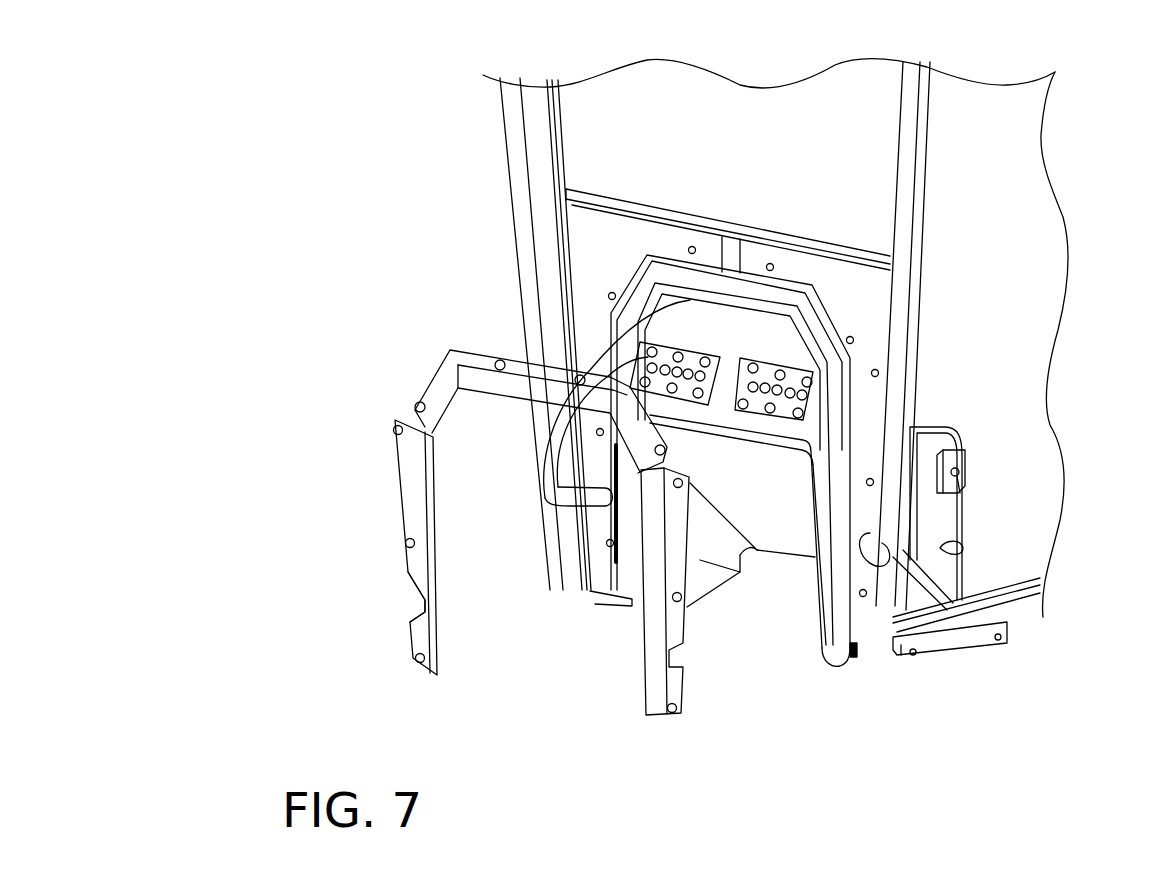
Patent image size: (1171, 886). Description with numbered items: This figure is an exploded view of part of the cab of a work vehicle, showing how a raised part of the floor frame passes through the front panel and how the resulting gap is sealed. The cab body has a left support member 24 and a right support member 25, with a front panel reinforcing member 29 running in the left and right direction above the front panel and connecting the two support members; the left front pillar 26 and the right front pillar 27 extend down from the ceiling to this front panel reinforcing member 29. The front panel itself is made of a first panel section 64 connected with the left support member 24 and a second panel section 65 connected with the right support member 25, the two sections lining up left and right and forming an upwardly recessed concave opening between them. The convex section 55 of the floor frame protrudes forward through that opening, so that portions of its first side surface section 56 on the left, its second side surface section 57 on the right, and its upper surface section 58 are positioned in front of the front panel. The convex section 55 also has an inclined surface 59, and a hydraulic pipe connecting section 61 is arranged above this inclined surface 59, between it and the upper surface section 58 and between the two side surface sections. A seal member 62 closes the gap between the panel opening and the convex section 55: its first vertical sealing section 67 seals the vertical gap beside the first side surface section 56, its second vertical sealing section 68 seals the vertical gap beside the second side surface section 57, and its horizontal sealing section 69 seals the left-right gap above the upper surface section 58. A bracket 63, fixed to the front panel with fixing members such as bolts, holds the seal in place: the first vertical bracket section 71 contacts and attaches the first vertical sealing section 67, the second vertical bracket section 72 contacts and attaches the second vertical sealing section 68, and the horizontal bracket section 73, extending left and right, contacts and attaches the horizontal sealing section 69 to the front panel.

The left support member 24 is at (913, 300).
The right support member 25 is at (566, 267).
The left front pillar 26 is at (925, 126).
The right front pillar 27 is at (548, 117).
The front panel reinforcing member 29 is at (838, 275).
The convex section 55 is at (793, 590).
The first side surface section 56 is at (840, 654).
The second side surface section 57 is at (705, 580).
The upper surface section 58 is at (610, 316).
The inclined surface 59 is at (770, 515).
The hydraulic pipe connecting section 61 is at (565, 430).
The seal member 62 is at (870, 417).
The bracket 63 is at (385, 493).
The first panel section 64 is at (870, 332).
The second panel section 65 is at (590, 240).
The first vertical sealing section 67 is at (838, 493).
The second vertical sealing section 68 is at (606, 334).
The horizontal sealing section 69 is at (710, 278).
The first vertical bracket section 71 is at (657, 690).
The second vertical bracket section 72 is at (415, 571).
The horizontal bracket section 73 is at (487, 383).